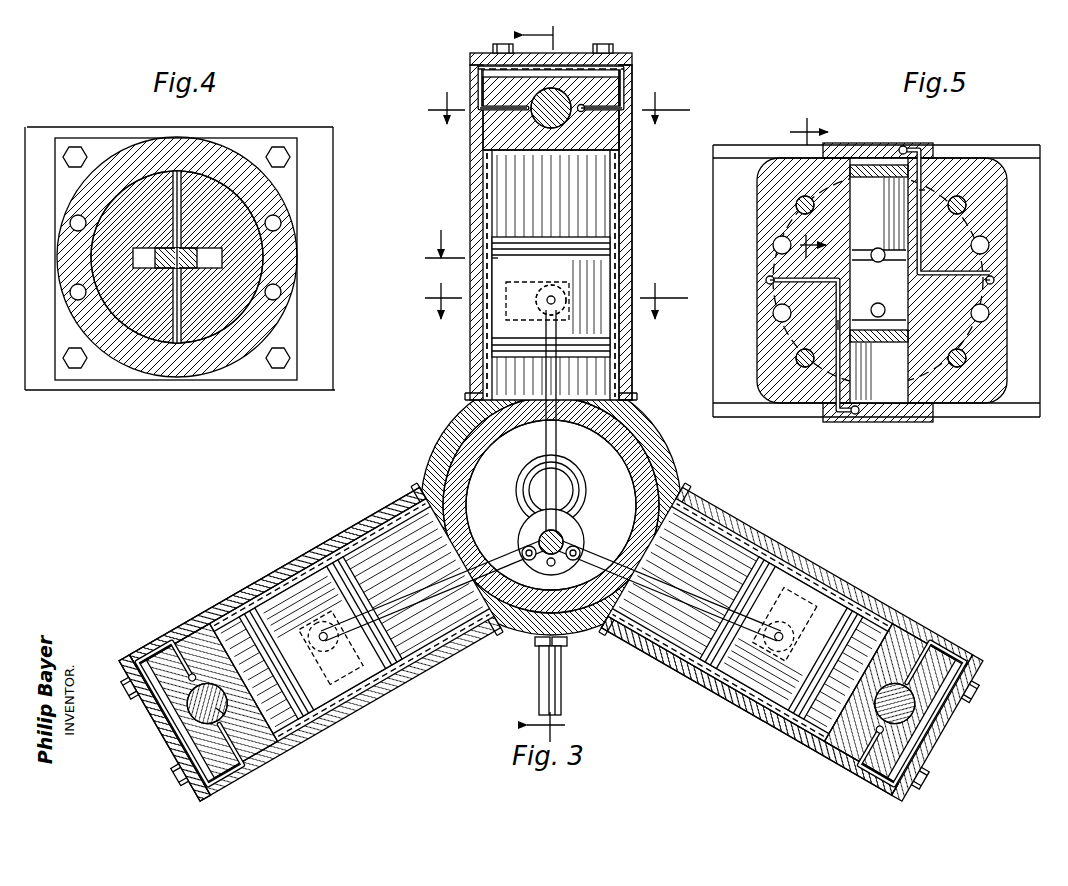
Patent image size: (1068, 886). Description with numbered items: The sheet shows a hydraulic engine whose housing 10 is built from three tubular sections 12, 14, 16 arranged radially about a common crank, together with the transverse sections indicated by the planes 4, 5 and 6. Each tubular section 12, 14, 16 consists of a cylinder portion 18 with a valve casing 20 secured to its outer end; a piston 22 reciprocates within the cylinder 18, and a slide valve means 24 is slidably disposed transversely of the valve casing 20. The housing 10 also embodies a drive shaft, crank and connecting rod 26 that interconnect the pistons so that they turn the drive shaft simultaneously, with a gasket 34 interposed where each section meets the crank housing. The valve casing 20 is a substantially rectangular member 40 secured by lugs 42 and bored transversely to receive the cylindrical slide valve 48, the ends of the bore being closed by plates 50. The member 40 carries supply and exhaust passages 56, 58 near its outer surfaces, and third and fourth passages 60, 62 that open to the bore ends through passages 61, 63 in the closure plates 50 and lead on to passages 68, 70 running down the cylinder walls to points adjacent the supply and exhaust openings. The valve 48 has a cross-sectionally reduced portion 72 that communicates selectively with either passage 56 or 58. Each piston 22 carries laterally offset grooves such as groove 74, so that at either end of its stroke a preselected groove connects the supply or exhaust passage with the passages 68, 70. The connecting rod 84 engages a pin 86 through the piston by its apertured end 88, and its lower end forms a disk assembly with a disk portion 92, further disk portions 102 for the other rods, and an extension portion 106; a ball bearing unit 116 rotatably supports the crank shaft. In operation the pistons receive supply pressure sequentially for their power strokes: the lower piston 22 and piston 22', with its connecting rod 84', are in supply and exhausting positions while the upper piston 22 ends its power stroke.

In FIG. 3, the housing 10 is at (672, 418).
In FIG. 3, the tubular section 12 is at (345, 535).
In FIG. 5, the tubular section 12 is at (816, 187).
In FIG. 3, the tubular section 14 is at (636, 213).
In FIG. 3, the tubular section 16 is at (702, 690).
In FIG. 3, the cylinder portion 18 is at (634, 234).
In FIG. 4, the cylinder portion 18 is at (214, 148).
In FIG. 3, the valve casing 20 is at (258, 770).
In FIG. 3, the piston 22 is at (424, 459).
In FIG. 4, the piston 22 is at (176, 241).
In FIG. 3, the piston 22' is at (781, 631).
In FIG. 3, the slide valve means 24 is at (216, 708).
In FIG. 3, the drive shaft, crank and connecting rod 26 is at (597, 506).
In FIG. 3, the gasket 34 is at (632, 400).
In FIG. 3, the rectangular member 40 is at (473, 73).
In FIG. 5, the rectangular member 40 is at (958, 402).
In FIG. 3, the lug 42 is at (613, 48).
In FIG. 5, the lug 42 is at (968, 205).
In FIG. 5, the slide valve 48 is at (879, 280).
In FIG. 5, the closure plate 50 is at (858, 148).
In FIG. 4, the supply passage 56 is at (71, 295).
In FIG. 5, the supply passage 56 is at (776, 317).
In FIG. 3, the exhaust passage 58 is at (630, 74).
In FIG. 4, the exhaust passage 58 is at (70, 225).
In FIG. 5, the exhaust passage 58 is at (775, 243).
In FIG. 3, the third passage 60 is at (504, 112).
In FIG. 5, the third passage 60 is at (836, 326).
In FIG. 5, the closure plate passage 61 is at (848, 424).
In FIG. 3, the fourth passage 62 is at (596, 112).
In FIG. 5, the fourth passage 62 is at (925, 190).
In FIG. 5, the closure plate passage 63 is at (912, 148).
In FIG. 3, the cylinder wall passage 68 is at (483, 204).
In FIG. 5, the cylinder wall passage 68 is at (768, 284).
In FIG. 3, the cylinder wall passage 70 is at (619, 187).
In FIG. 5, the cylinder wall passage 70 is at (995, 283).
In FIG. 5, the cross-sectionally reduced portion 72 is at (866, 266).
In FIG. 3, the upper intermediately disposed groove 74 is at (498, 258).
In FIG. 3, the connecting rod 84 is at (567, 424).
In FIG. 3, the connecting rod 84' is at (551, 589).
In FIG. 4, the pin 86 is at (183, 308).
In FIG. 3, the apertured end 88 is at (560, 288).
In FIG. 4, the apertured end 88 is at (196, 251).
In FIG. 3, the disk portion 92 is at (540, 521).
In FIG. 3, the disk portion 102 is at (576, 546).
In FIG. 3, the extension portion 106 is at (577, 561).
In FIG. 3, the ball bearing unit 116 is at (575, 480).
In FIG. 3, the section line 4— 4 is at (555, 279).
In FIG. 3, the section line 5— 5 is at (559, 118).
In FIG. 3, the section line 6— 6 is at (552, 384).